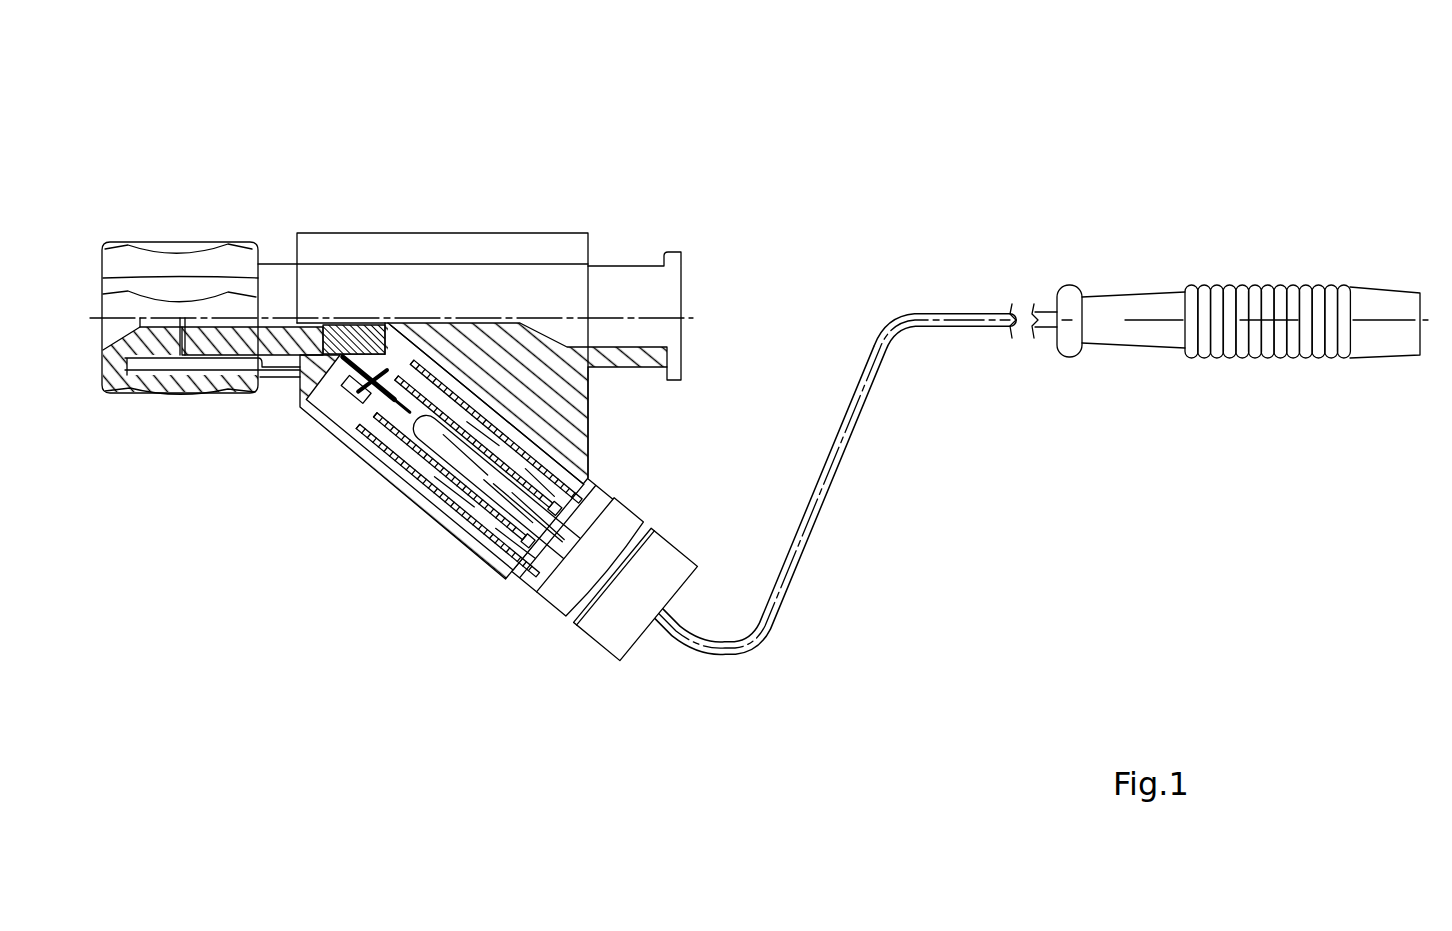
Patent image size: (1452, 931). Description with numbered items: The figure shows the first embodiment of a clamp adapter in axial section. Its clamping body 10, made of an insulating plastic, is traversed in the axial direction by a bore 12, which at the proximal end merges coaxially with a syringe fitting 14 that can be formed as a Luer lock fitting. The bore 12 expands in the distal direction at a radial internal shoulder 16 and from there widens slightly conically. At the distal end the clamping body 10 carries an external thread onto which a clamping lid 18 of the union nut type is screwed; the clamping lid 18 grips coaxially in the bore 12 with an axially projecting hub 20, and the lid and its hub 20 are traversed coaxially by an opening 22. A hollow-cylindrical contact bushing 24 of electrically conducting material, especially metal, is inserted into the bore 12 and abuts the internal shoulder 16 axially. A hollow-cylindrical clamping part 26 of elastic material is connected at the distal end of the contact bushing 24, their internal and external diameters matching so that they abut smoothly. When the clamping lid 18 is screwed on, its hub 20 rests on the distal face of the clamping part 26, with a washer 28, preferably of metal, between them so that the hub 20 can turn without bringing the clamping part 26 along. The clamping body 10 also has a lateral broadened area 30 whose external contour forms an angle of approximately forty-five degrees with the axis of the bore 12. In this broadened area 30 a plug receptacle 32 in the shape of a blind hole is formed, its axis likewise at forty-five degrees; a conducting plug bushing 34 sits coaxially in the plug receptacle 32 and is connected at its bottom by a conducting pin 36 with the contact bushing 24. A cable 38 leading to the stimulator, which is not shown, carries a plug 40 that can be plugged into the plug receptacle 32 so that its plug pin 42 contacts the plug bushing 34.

The clamping body 10 is at (464, 347).
The bore 12 is at (407, 320).
The syringe fitting 14 is at (612, 307).
The internal shoulder 16 is at (389, 320).
The clamping lid 18 is at (110, 388).
The hub 20 is at (148, 343).
The opening 22 is at (172, 318).
The contact bushing 24 is at (352, 325).
The clamping part 26 is at (263, 343).
The washer 28 is at (180, 393).
The lateral broadened area 30 is at (436, 505).
The plug receptacle 32 is at (527, 464).
The plug bushing 34 is at (376, 417).
The conducting pin 36 is at (343, 365).
The cable 38 is at (826, 487).
The plug 40 is at (540, 562).
The plug pin 42 is at (492, 483).